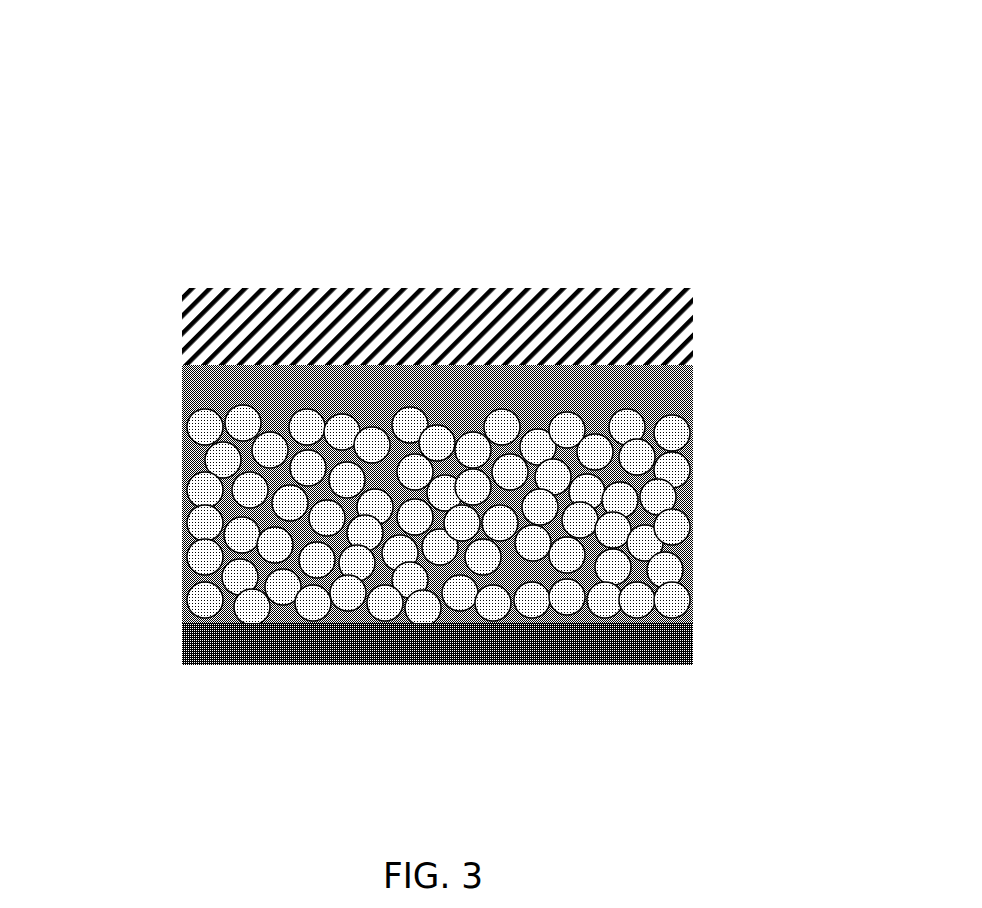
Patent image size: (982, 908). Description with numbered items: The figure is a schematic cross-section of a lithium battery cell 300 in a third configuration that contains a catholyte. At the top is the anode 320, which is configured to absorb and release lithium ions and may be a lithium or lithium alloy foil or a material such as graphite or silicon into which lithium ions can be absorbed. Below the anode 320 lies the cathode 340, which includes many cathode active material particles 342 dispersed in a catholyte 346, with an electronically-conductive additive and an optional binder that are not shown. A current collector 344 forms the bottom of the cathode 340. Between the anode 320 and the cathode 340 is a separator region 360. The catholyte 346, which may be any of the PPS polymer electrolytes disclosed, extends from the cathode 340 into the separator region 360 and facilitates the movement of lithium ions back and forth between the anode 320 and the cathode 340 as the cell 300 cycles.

The lithium battery cell 300 is at (248, 182).
The anode 320 is at (218, 312).
The separator region 360 is at (695, 372).
The cathode 340 is at (448, 583).
The cathode active material particles 342 is at (483, 510).
The current collector 344 is at (371, 700).
The catholyte 346 is at (643, 390).